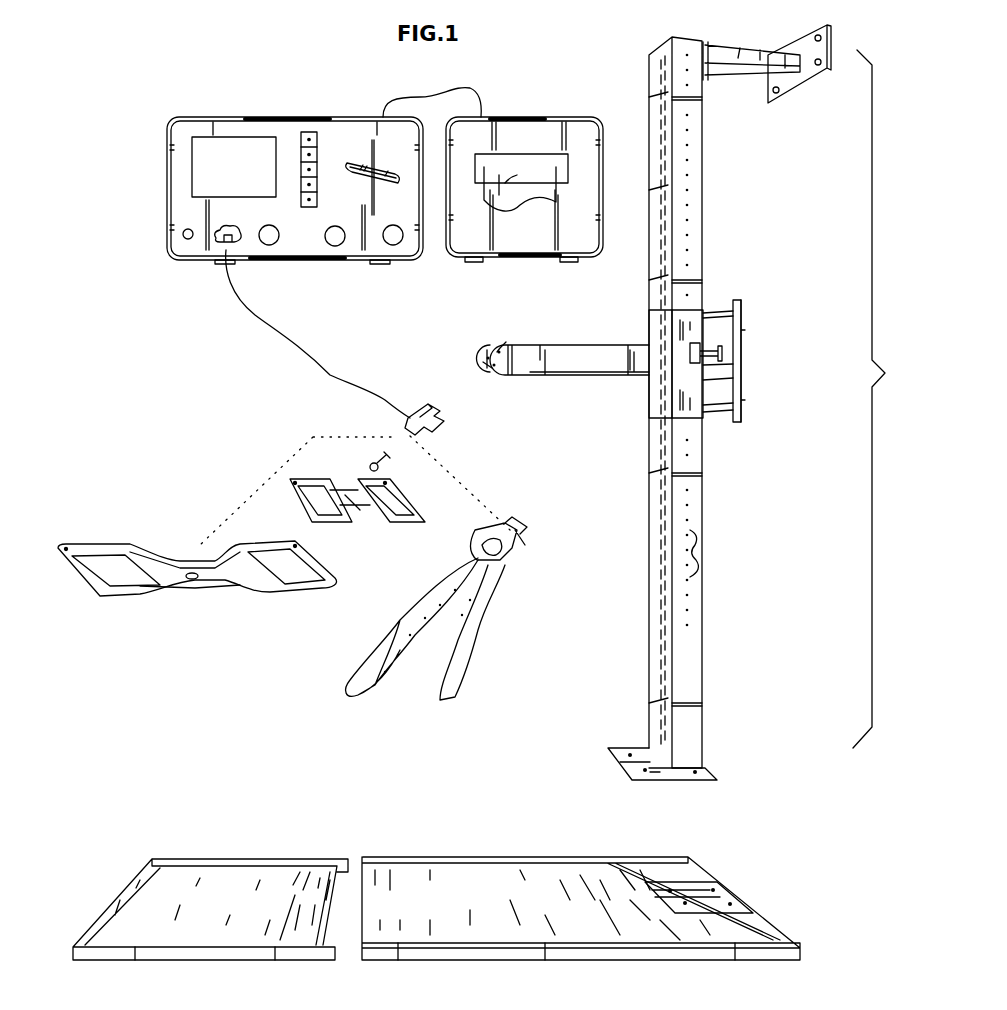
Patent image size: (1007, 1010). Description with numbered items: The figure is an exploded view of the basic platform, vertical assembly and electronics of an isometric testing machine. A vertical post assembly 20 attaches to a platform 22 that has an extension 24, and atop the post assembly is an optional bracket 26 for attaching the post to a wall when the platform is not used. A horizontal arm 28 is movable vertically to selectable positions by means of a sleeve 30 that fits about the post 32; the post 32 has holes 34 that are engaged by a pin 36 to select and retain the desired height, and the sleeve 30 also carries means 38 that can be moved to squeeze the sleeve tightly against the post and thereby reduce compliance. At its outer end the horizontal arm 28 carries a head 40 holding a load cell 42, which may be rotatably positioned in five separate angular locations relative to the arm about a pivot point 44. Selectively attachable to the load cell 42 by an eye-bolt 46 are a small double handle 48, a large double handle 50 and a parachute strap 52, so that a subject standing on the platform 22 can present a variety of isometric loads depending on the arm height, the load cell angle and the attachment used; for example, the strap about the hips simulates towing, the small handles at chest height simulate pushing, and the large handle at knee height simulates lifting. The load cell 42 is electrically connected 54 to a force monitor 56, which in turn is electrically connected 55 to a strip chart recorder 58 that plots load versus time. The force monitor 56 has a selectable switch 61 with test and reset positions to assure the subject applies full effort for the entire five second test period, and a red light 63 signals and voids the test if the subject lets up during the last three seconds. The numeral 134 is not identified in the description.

The vertical post assembly 20 is at (694, 402).
The platform 22 is at (495, 856).
The extension 24 is at (230, 858).
The bracket 26 is at (829, 43).
The horizontal arm 28 is at (561, 360).
The sleeve 30 is at (718, 412).
The post 32 is at (703, 505).
The holes 34 is at (700, 552).
The pin 36 is at (708, 350).
The means movable to squeeze the sleeve 38 is at (741, 318).
The head 40 is at (493, 350).
The load cell 42 is at (425, 397).
The pivot point 44 is at (490, 368).
The eye-bolt 46 is at (372, 462).
The small double handle 48 is at (410, 500).
The large double handle 50 is at (118, 545).
The parachute strap 52 is at (470, 636).
The electrical connection 54 is at (290, 345).
The electrical connection 55 is at (478, 96).
The force monitor 56 is at (295, 189).
The strip chart recorder 58 is at (545, 116).
The selectable switch 61 is at (394, 242).
The red light 63 is at (318, 132).
The pin 134 is at (500, 348).